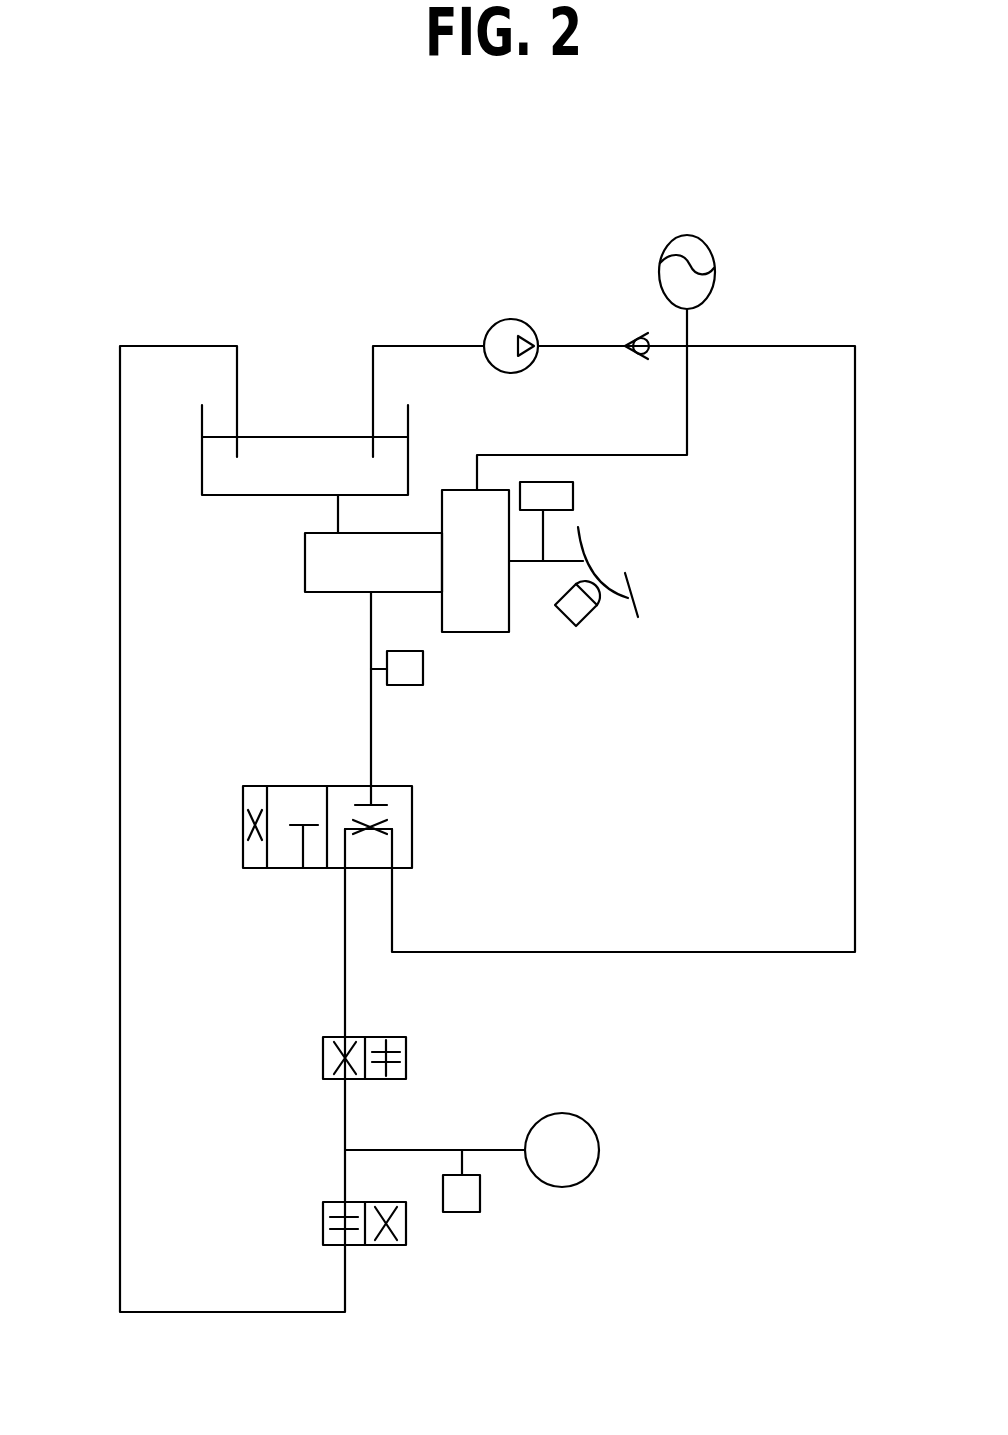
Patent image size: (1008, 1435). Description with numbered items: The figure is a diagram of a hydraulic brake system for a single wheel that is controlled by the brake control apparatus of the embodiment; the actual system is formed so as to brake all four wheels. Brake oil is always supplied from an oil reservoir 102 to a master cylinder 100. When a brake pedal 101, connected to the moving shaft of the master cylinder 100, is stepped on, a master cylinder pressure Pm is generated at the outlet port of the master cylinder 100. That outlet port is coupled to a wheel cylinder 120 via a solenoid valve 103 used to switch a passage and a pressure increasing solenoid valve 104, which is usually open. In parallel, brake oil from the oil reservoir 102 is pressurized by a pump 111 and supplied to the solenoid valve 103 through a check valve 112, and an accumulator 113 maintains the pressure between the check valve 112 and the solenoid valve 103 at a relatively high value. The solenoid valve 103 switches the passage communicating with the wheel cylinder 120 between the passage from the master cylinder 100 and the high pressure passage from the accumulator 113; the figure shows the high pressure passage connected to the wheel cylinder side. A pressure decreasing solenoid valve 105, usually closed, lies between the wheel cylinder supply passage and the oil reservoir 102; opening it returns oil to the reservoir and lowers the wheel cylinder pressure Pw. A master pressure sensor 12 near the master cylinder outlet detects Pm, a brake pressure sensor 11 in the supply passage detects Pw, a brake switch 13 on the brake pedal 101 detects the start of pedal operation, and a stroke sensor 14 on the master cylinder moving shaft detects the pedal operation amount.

The brake pressure sensor 11 is at (468, 1205).
The master pressure sensor 12 is at (407, 672).
The brake switch 13 is at (577, 612).
The stroke sensor 14 is at (575, 497).
The master cylinder 100 is at (331, 583).
The brake pedal 101 is at (642, 602).
The oil reservoir 102 is at (241, 485).
The solenoid valve 103 is at (245, 842).
The pressure increasing solenoid valve 104 is at (323, 1058).
The pressure decreasing solenoid valve 105 is at (323, 1226).
The pump 111 is at (518, 323).
The check valve 112 is at (641, 355).
The accumulator 113 is at (712, 262).
The wheel cylinder 120 is at (583, 1128).